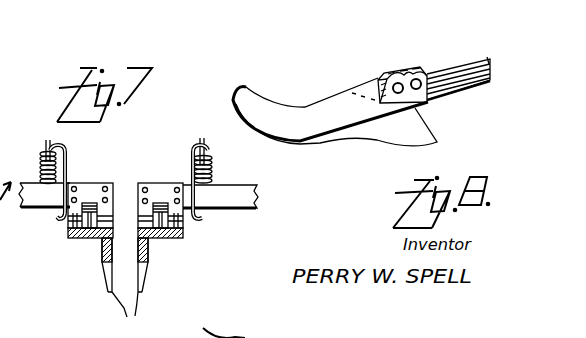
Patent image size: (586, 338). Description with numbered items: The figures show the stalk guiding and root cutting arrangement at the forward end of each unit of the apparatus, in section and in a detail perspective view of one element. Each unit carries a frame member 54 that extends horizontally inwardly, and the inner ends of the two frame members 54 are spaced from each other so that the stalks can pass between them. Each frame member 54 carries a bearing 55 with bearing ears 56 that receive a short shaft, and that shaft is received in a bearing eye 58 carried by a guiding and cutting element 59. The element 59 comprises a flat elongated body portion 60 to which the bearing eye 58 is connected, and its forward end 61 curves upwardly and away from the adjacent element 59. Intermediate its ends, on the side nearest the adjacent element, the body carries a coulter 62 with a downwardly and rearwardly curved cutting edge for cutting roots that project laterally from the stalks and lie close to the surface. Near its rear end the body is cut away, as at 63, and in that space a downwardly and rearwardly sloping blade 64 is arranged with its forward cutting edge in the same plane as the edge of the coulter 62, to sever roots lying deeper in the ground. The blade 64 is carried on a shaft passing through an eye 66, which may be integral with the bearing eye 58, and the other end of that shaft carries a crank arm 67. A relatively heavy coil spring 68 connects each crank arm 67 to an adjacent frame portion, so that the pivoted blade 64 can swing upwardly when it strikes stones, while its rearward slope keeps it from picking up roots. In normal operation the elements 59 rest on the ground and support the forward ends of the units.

In FIG. 7, the frame member 54 is at (30, 199).
In FIG. 7, the bearing 55 is at (90, 189).
In FIG. 7, the bearing ears 56 is at (78, 246).
In FIG. 7, the bearing eye 58 is at (89, 222).
In FIG. 8, the bearing eye 58 is at (385, 78).
In FIG. 7, the guiding and cutting element 59 is at (80, 242).
In FIG. 8, the guiding and cutting element 59 is at (312, 107).
In FIG. 7, the body portion 60 is at (68, 235).
In FIG. 8, the body portion 60 is at (437, 74).
In FIG. 8, the forward end 61 is at (258, 102).
In FIG. 7, the coulter 62 is at (102, 263).
In FIG. 8, the coulter 62 is at (383, 140).
In FIG. 8, the cut-away portion 63 is at (415, 107).
In FIG. 7, the blade 64 is at (126, 314).
In FIG. 8, the eye 66 is at (412, 79).
In FIG. 7, the crank arm 67 is at (60, 154).
In FIG. 7, the coil spring 68 is at (45, 153).